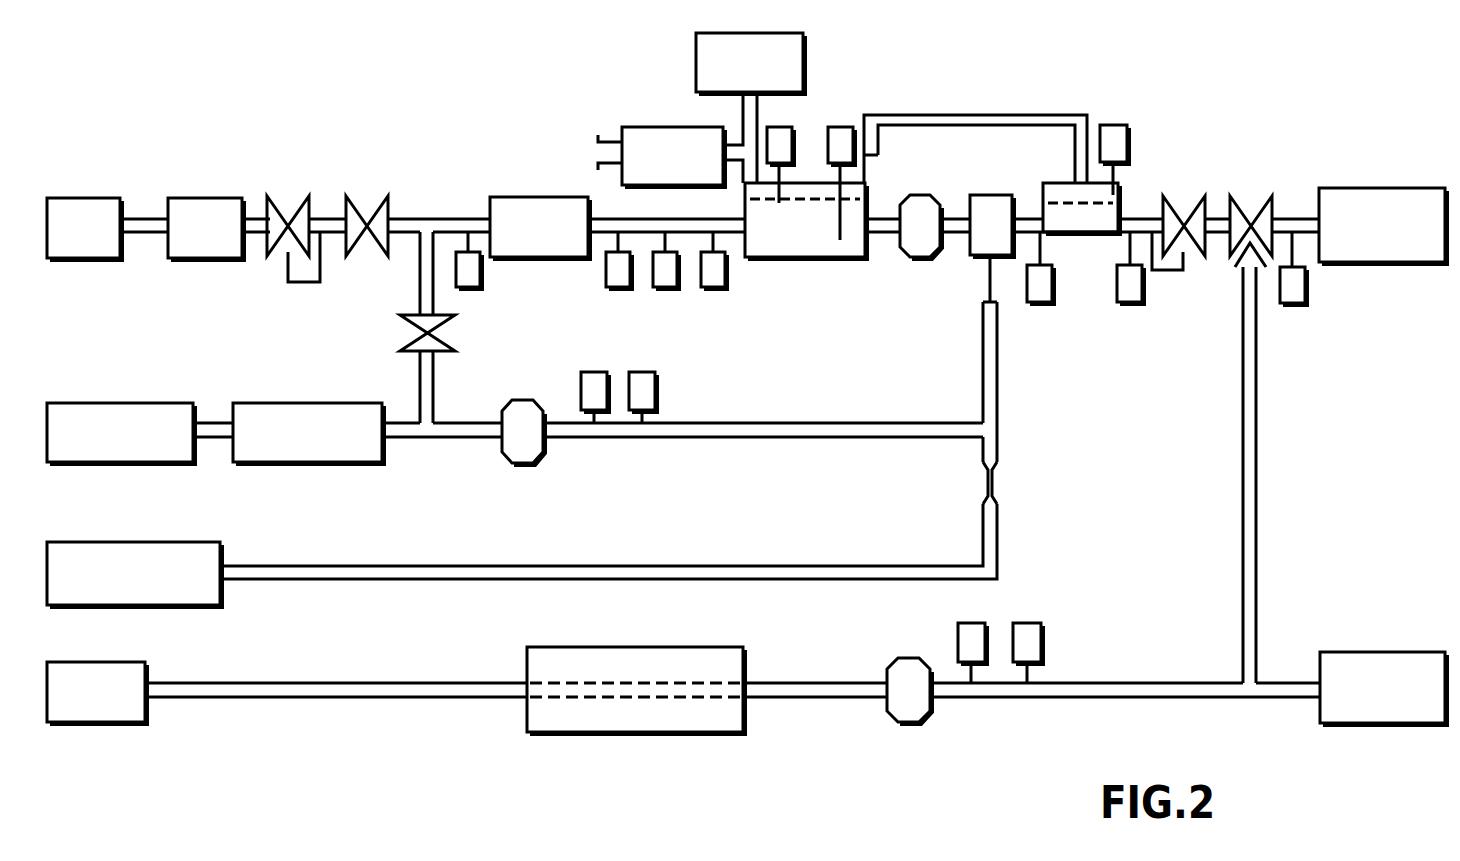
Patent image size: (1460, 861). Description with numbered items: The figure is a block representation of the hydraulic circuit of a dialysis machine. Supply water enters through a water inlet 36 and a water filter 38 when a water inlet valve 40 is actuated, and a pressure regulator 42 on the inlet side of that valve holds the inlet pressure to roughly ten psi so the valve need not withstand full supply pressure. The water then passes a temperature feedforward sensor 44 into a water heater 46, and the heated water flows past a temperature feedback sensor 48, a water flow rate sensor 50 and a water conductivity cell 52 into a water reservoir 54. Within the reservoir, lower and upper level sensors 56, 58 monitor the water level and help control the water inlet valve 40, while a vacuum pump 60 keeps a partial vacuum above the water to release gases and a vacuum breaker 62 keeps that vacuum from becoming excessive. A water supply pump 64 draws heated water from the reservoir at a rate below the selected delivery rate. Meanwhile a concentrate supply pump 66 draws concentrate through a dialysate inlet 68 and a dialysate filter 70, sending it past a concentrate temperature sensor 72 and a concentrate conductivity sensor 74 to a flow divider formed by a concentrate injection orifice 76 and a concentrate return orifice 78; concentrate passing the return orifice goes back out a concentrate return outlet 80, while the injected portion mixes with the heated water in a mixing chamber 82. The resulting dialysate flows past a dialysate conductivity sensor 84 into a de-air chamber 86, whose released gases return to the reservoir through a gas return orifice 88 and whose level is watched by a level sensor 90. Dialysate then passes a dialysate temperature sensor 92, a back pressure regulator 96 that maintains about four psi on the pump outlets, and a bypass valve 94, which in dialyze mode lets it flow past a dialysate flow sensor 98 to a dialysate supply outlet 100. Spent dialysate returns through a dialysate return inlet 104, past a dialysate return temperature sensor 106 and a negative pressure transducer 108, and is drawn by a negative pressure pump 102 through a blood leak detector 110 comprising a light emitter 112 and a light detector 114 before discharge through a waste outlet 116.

The water inlet 36 is at (92, 198).
The water filter 38 is at (234, 198).
The water inlet valve 40 is at (368, 212).
The pressure regulator 42 is at (290, 212).
The temperature feedforward sensor 44 is at (470, 287).
The water heater 46 is at (538, 258).
The temperature feedback sensor 48 is at (612, 287).
The water flow rate sensor 50 is at (662, 287).
The water conductivity cell 52 is at (714, 287).
The water reservoir 54 is at (832, 260).
The lower level sensor 56 is at (840, 127).
The upper level sensor 58 is at (792, 134).
The vacuum pump 60 is at (782, 33).
The vacuum breaker 62 is at (668, 127).
The water supply pump 64 is at (905, 258).
The concentrate supply pump 66 is at (518, 400).
The dialysate inlet 68 is at (165, 403).
The dialysate filter 70 is at (342, 403).
The concentrate temperature sensor 72 is at (594, 372).
The concentrate conductivity sensor 74 is at (644, 372).
The concentrate injection orifice 76 is at (990, 282).
The concentrate return orifice 78 is at (997, 480).
The concentrate return outlet 80 is at (210, 542).
The mixing chamber 82 is at (990, 195).
The dialysate conductivity sensor 84 is at (1042, 304).
The de-air chamber 86 is at (1040, 196).
The gas return orifice 88 is at (878, 152).
The level sensor 90 is at (1110, 125).
The dialysate temperature sensor 92 is at (1128, 304).
The bypass valve 94 is at (1250, 204).
The back pressure regulator 96 is at (1186, 204).
The dialysate flow sensor 98 is at (1305, 288).
The dialysate supply outlet 100 is at (1410, 188).
The negative pressure pump 102 is at (922, 658).
The dialysate return inlet 104 is at (1400, 652).
The dialysate return temperature sensor 106 is at (1041, 630).
The negative pressure transducer 108 is at (984, 625).
The blood leak detector 110 is at (644, 665).
The light emitter 112 is at (527, 708).
The light detector 114 is at (527, 661).
The waste outlet 116 is at (150, 662).